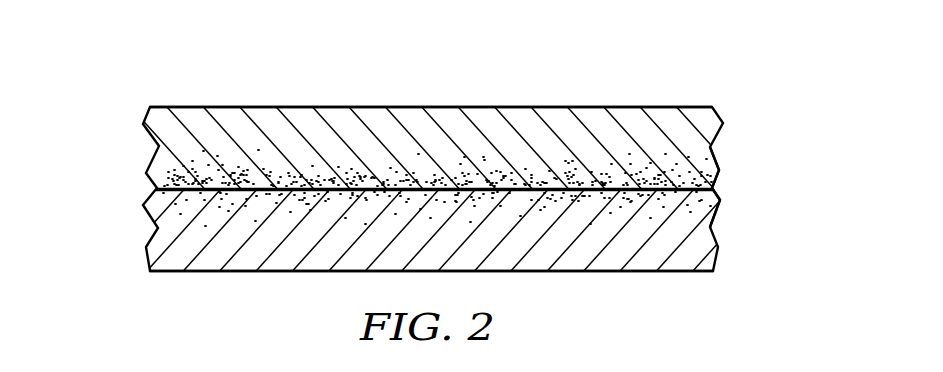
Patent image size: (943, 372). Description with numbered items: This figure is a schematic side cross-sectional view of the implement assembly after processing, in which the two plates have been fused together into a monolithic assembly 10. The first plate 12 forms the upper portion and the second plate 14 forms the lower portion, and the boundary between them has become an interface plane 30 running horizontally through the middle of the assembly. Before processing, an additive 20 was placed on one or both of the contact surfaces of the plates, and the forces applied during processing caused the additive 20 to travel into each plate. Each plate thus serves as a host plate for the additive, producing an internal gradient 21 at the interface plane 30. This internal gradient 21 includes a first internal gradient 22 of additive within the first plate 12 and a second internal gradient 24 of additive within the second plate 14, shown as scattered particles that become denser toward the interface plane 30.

The monolithic assembly 10 is at (456, 135).
The first plate 12 is at (160, 148).
The second plate 14 is at (160, 241).
The additive 20 is at (724, 192).
The internal gradient 21 is at (437, 146).
The first internal gradient 22 is at (731, 161).
The second internal gradient 24 is at (726, 218).
The interface plane 30 is at (152, 191).